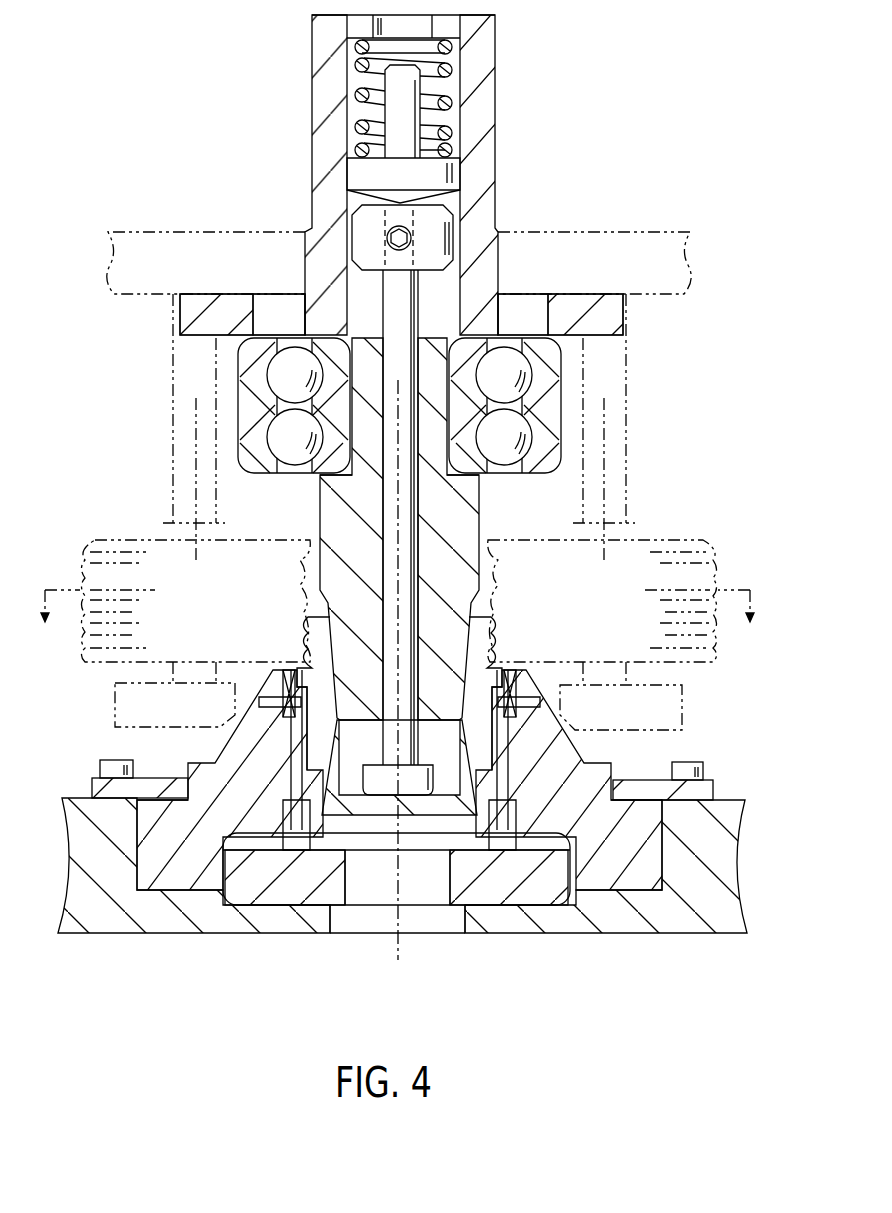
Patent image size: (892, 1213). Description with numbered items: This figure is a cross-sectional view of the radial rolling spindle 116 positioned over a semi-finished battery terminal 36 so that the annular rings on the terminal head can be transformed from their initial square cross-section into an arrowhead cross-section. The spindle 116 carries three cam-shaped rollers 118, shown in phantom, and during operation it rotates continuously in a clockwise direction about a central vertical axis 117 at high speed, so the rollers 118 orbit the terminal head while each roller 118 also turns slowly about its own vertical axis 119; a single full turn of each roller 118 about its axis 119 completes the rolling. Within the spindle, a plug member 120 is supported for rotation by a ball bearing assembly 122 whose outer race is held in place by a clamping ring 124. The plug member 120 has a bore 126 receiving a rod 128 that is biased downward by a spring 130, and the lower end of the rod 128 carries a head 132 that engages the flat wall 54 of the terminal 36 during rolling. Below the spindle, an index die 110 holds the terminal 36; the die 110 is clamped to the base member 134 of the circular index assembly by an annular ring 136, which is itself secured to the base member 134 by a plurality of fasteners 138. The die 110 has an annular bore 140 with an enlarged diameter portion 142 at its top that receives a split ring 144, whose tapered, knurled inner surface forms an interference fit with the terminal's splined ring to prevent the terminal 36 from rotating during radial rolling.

The semi-finished battery terminal 36 is at (305, 765).
The flat wall 54 is at (360, 817).
The index die 110 is at (600, 905).
The radial rolling spindle 116 is at (712, 462).
The central vertical axis 117 is at (397, 940).
The cam-shaped rollers 118 is at (97, 540).
The vertical axis of roller 119 is at (196, 448).
The plug member 120 is at (480, 495).
The ball bearing assembly 122 is at (563, 394).
The clamping ring 124 is at (623, 313).
The bore 126 is at (383, 514).
The rod 128 is at (422, 745).
The spring 130 is at (456, 100).
The head 132 is at (440, 775).
The base member 134 is at (725, 905).
The annular ring 136 is at (713, 788).
The fasteners 138 is at (688, 762).
The annular bore 140 is at (457, 810).
The enlarged diameter portion 142 is at (270, 715).
The split ring 144 is at (513, 735).